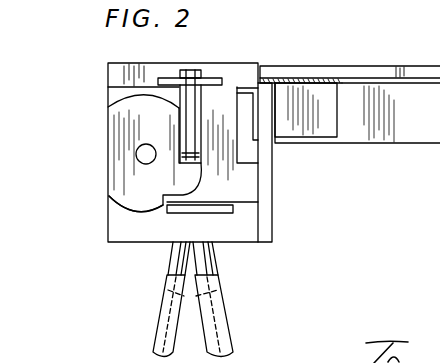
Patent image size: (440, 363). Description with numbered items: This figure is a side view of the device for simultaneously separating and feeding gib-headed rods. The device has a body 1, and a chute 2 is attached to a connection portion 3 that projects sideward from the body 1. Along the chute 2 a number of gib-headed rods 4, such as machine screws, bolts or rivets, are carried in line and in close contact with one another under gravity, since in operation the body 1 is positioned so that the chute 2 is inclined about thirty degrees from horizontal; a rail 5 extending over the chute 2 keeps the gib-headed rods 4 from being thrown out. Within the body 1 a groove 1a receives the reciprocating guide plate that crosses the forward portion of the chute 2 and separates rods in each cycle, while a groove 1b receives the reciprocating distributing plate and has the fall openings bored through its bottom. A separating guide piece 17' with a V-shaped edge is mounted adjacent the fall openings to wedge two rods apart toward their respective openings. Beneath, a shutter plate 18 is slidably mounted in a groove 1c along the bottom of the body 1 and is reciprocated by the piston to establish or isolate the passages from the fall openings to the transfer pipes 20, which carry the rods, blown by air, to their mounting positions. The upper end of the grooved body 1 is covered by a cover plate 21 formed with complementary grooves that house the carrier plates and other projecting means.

The body 1 is at (108, 142).
The groove 1a is at (258, 152).
The groove 1b is at (110, 95).
The groove 1c is at (167, 213).
The chute 2 is at (362, 143).
The connection portion 3 is at (311, 137).
The gib-headed rods 4 is at (307, 83).
The rail 5 is at (379, 66).
The separating guide piece 17' is at (206, 97).
The shutter plate 18 is at (225, 211).
The transfer pipes 20 is at (218, 302).
The cover plate 21 is at (118, 63).